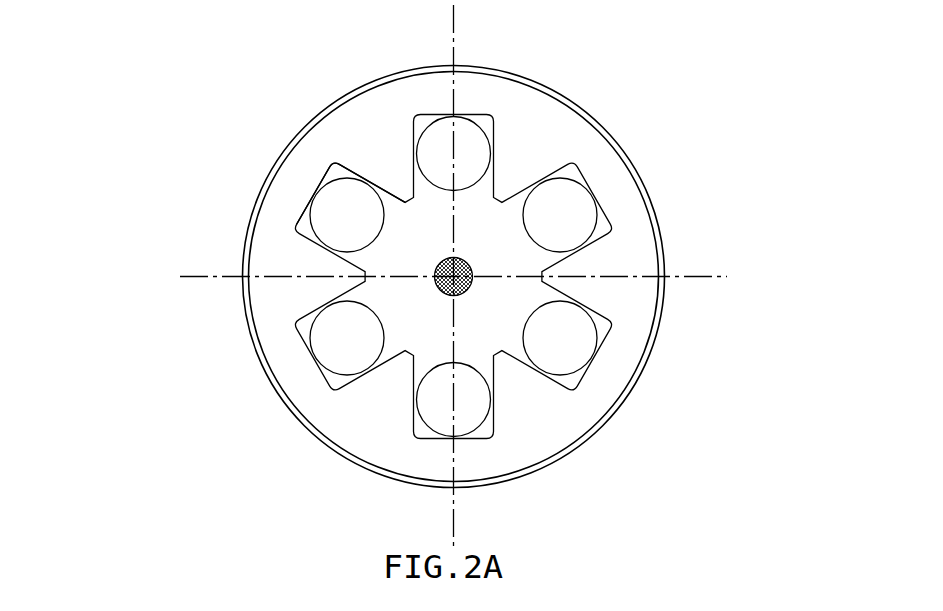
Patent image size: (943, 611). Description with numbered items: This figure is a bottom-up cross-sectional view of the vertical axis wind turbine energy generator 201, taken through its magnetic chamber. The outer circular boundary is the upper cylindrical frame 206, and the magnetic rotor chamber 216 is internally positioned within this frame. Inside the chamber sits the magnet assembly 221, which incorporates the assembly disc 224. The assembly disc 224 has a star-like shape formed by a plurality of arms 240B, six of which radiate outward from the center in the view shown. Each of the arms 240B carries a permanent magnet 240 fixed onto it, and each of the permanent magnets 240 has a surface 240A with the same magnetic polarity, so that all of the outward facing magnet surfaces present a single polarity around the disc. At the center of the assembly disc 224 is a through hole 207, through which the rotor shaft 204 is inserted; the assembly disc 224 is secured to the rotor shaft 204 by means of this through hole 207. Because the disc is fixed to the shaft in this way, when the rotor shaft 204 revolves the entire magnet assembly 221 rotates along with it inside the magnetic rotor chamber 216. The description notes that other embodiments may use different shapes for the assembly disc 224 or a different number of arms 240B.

The vertical axis wind turbine energy generator 201 is at (213, 88).
The rotor shaft 204 is at (440, 285).
The upper cylindrical frame 206 is at (253, 343).
The through hole 207 is at (470, 263).
The magnetic rotor chamber 216 is at (601, 397).
The magnet assembly 221 is at (524, 263).
The assembly disc 224 is at (480, 323).
The permanent magnets 240 is at (310, 209).
The surface 240A is at (342, 220).
The arms 240B is at (338, 173).